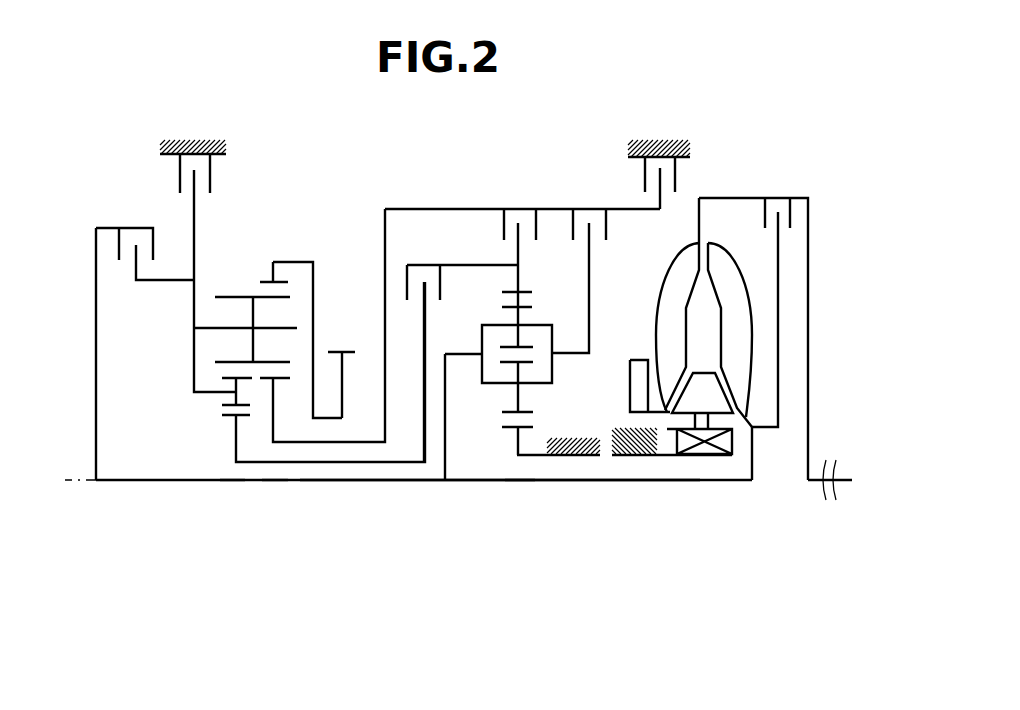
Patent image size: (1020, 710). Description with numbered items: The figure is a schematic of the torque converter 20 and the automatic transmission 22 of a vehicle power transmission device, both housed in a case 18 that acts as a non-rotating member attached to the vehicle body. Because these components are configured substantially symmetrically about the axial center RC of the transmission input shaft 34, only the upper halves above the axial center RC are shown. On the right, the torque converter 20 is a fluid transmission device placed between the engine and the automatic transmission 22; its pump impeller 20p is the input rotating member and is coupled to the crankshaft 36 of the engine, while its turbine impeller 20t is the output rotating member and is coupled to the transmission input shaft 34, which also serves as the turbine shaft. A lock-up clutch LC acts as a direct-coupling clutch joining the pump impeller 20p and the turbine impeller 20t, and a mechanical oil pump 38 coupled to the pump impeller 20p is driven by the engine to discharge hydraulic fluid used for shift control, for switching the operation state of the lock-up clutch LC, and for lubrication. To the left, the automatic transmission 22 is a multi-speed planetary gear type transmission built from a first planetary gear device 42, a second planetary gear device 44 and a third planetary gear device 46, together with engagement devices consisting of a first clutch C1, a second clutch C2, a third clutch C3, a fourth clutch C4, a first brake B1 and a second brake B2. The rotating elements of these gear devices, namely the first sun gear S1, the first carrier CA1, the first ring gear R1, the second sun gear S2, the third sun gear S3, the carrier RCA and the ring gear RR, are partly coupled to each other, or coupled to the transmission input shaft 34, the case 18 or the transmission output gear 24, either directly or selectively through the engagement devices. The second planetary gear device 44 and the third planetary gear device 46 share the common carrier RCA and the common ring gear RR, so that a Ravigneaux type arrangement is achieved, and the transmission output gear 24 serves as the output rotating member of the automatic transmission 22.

The automatic transmission 22 is at (171, 118).
The case 18 is at (196, 148).
The second brake B2 is at (212, 173).
The first brake B1 is at (677, 183).
The first clutch C1 is at (462, 352).
The second clutch C2 is at (145, 343).
The third clutch C3 is at (522, 240).
The fourth clutch C4 is at (579, 270).
The ring gear RR is at (261, 281).
The carrier RCA is at (190, 345).
The second sun gear S2 is at (292, 373).
The third sun gear S3 is at (227, 412).
The transmission output gear 24 is at (347, 350).
The first ring gear R1 is at (522, 290).
The first carrier CA1 is at (467, 353).
The first sun gear S1 is at (507, 423).
The torque converter 20 is at (698, 313).
The pump impeller 20p is at (672, 342).
The turbine impeller 20t is at (735, 318).
The lock-up clutch LC is at (752, 210).
The oil pump 38 is at (638, 382).
The transmission input shaft 34 is at (597, 481).
The crankshaft 36 is at (837, 468).
The axial center RC is at (92, 484).
The first planetary gear device 42 is at (520, 498).
The second planetary gear device 44 is at (275, 498).
The third planetary gear device 46 is at (232, 498).